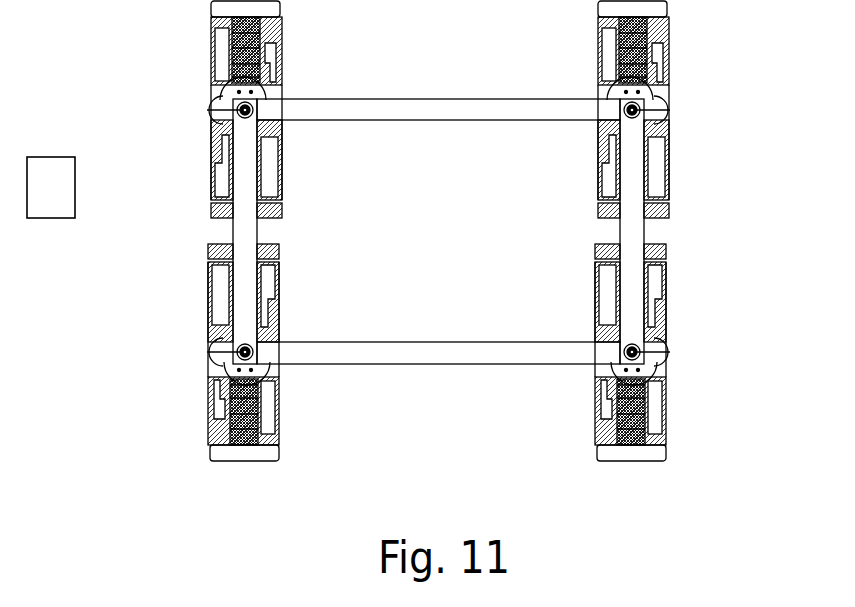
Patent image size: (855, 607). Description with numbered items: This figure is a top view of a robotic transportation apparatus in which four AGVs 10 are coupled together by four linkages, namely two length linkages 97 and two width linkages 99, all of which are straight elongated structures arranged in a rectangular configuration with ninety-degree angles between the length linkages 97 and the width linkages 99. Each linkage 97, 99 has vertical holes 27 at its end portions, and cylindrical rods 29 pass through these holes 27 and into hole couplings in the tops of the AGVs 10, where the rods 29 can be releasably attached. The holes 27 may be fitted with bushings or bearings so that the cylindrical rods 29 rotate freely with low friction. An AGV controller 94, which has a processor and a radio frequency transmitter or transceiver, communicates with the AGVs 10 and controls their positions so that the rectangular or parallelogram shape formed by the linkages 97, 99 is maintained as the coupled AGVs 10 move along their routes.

The AGV 10 is at (282, 64).
The vertical hole 27 is at (207, 112).
The cylindrical rod 29 is at (207, 106).
The AGV controller 94 is at (50, 164).
The length linkage 97 is at (439, 108).
The width linkage 99 is at (243, 233).